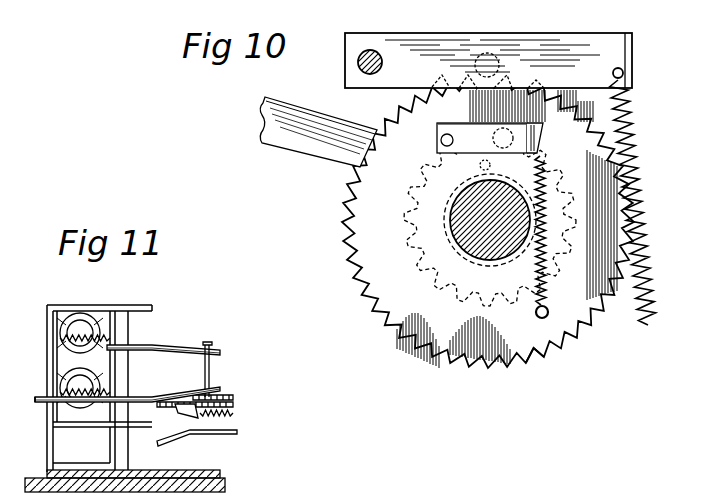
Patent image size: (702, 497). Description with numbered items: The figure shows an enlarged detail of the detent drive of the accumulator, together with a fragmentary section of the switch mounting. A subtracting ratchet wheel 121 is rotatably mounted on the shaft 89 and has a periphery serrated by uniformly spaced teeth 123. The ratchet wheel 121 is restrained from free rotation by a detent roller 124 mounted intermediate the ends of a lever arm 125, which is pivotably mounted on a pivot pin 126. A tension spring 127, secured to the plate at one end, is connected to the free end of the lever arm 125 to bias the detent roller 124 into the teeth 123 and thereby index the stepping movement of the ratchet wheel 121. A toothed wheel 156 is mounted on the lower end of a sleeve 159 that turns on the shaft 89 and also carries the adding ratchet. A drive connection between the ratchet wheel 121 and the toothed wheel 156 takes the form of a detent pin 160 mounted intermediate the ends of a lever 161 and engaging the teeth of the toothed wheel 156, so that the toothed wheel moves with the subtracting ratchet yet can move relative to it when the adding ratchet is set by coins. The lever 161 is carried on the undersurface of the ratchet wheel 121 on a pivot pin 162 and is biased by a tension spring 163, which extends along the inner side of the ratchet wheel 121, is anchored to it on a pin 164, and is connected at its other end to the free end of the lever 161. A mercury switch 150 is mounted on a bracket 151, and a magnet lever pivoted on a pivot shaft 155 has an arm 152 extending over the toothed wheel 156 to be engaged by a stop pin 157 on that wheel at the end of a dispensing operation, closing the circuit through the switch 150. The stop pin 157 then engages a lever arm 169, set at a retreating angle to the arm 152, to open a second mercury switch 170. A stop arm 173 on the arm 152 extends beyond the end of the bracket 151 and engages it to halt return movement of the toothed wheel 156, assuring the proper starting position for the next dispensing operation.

In FIG. 10, the shaft 89 is at (456, 217).
In FIG. 10, the subtracting ratchet wheel 121 is at (480, 370).
In FIG. 10, the teeth 123 is at (544, 360).
In FIG. 10, the detent roller 124 is at (483, 58).
In FIG. 10, the lever arm 125 is at (565, 35).
In FIG. 11, the lever arm 125 is at (198, 432).
In FIG. 10, the pivot pin 126 is at (358, 62).
In FIG. 10, the tension spring 127 is at (640, 172).
In FIG. 11, the mercury switch 150 is at (100, 390).
In FIG. 11, the bracket 151 is at (50, 452).
In FIG. 11, the arm 152 is at (165, 395).
In FIG. 11, the pivot shaft 155 is at (120, 443).
In FIG. 10, the toothed wheel 156 is at (417, 247).
In FIG. 10, the stop pin 157 is at (480, 166).
In FIG. 11, the stop pin 157 is at (210, 372).
In FIG. 10, the sleeve 159 is at (462, 186).
In FIG. 10, the detent pin 160 is at (487, 130).
In FIG. 10, the lever 161 is at (447, 125).
In FIG. 10, the pivot pin 162 is at (441, 138).
In FIG. 10, the tension spring 163 is at (546, 293).
In FIG. 10, the pin 164 is at (549, 312).
In FIG. 11, the lever arm 169 is at (167, 346).
In FIG. 11, the mercury switch 170 is at (100, 333).
In FIG. 11, the stop arm 173 is at (43, 404).